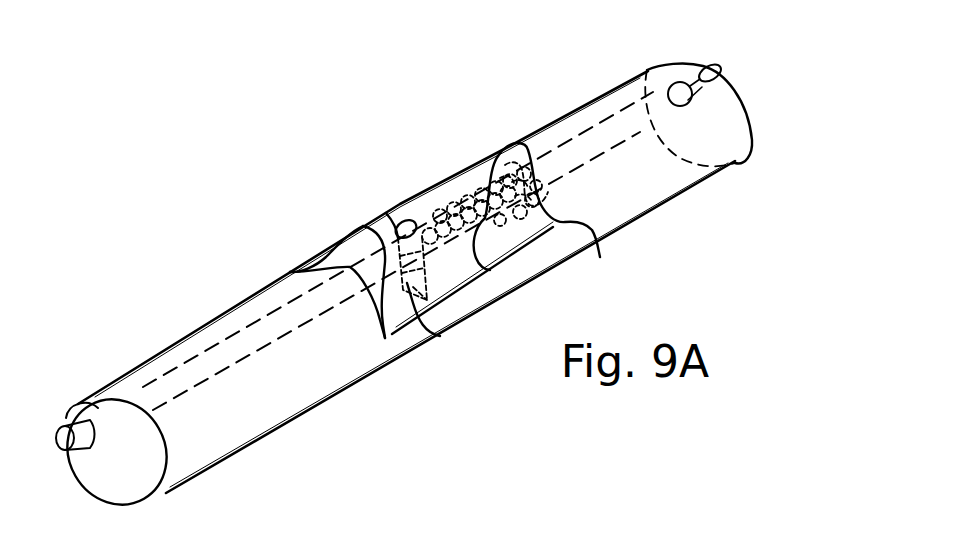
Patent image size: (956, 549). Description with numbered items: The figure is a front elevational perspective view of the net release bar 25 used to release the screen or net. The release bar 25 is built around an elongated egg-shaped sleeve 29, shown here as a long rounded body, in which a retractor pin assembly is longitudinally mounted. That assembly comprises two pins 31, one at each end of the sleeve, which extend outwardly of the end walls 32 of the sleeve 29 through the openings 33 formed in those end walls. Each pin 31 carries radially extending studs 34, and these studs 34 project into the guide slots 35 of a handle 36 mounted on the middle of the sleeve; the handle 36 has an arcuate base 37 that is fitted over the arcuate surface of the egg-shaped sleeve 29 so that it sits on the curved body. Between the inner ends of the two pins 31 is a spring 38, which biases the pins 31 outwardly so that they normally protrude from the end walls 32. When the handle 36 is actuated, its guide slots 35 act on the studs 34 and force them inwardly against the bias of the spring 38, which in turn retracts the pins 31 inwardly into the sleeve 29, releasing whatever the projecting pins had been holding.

The net release bar 25 is at (233, 282).
The egg-shaped sleeve 29 is at (580, 137).
The pins 31 is at (64, 450).
The end walls 32 is at (143, 480).
The openings 33 is at (83, 414).
The radially extending studs 34 is at (406, 222).
The guide slots 35 is at (600, 257).
The handle 36 is at (444, 178).
The arcuate base 37 is at (362, 290).
The spring 38 is at (527, 281).